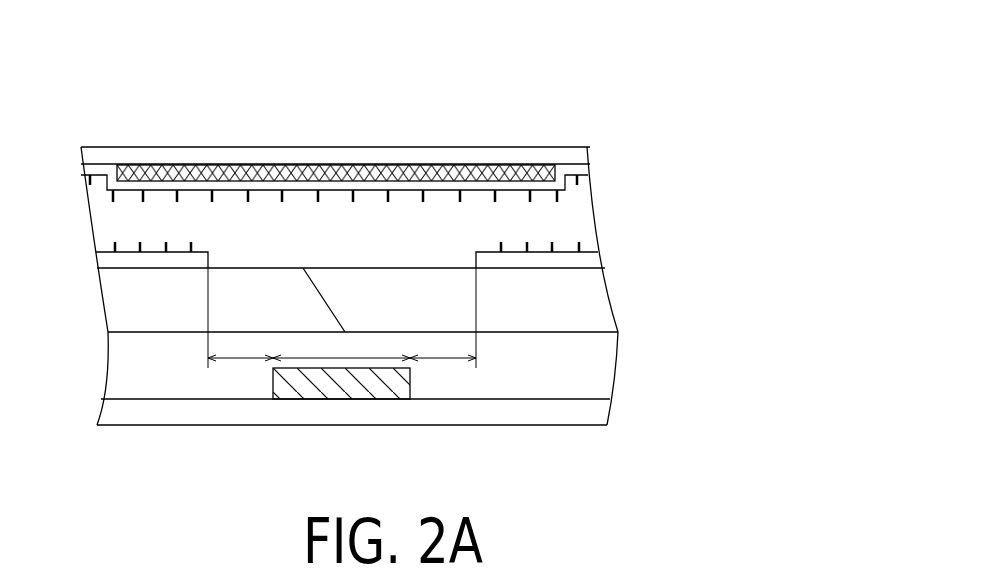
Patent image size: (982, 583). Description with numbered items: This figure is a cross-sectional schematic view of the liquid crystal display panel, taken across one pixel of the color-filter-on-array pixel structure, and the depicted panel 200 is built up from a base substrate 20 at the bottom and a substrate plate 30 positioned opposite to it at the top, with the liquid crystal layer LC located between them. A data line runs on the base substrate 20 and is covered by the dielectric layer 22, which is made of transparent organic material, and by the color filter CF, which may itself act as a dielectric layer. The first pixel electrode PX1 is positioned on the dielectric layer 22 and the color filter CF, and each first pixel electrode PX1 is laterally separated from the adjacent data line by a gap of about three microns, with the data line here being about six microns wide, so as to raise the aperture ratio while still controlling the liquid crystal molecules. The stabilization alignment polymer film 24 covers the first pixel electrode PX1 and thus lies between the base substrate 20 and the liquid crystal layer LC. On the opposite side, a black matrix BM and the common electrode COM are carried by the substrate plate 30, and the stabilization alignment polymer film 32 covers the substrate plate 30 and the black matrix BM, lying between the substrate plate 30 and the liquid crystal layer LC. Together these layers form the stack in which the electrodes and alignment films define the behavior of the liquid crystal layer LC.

The display panel 200 is at (647, 73).
The black matrix BM is at (337, 164).
The substrate plate 30 is at (583, 155).
The common electrode COM is at (582, 170).
The stabilization alignment polymer film 32 is at (562, 192).
The liquid crystal layer LC is at (580, 217).
The stabilization alignment polymer film 24 is at (580, 243).
The first pixel electrode PX1 is at (103, 263).
The color filter CF is at (116, 310).
The dielectric layer 22 is at (607, 372).
The base substrate 20 is at (598, 415).